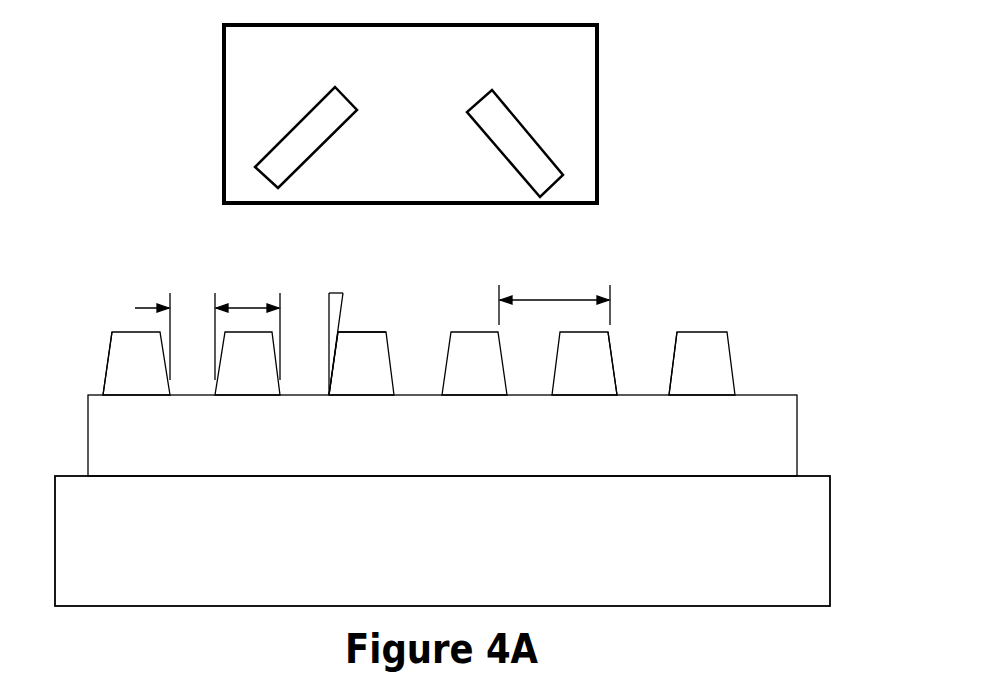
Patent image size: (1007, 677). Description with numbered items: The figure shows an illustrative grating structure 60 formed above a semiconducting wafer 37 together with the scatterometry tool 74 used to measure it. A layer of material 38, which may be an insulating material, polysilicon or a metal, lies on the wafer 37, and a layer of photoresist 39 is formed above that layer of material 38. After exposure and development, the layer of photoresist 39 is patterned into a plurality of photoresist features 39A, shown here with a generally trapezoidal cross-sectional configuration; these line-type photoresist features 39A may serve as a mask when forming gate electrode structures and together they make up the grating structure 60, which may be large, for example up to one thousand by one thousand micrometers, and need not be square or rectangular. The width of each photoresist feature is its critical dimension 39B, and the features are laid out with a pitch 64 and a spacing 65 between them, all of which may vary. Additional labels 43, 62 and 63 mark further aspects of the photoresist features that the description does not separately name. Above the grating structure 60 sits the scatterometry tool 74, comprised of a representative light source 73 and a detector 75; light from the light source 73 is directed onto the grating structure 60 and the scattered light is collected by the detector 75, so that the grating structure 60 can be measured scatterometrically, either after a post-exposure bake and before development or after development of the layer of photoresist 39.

The wafer 37 is at (137, 570).
The layer of material 38 is at (103, 453).
The layer of photoresist 39 is at (730, 372).
The photoresist features 39A is at (137, 348).
The critical dimension 39B is at (252, 308).
The top surface of feature 43 is at (350, 330).
The grating structure 60 is at (653, 283).
The sidewall 62 is at (613, 357).
The sidewall angle 63 is at (333, 291).
The pitch 64 is at (545, 300).
The spacing 65 is at (148, 308).
The light source 73 is at (267, 167).
The scatterometry tool 74 is at (580, 128).
The detector 75 is at (537, 170).